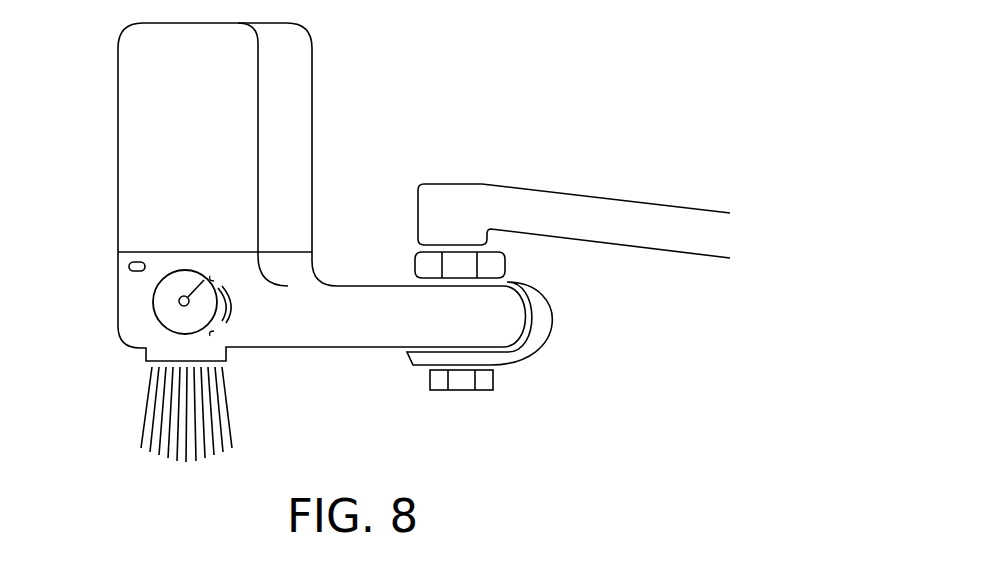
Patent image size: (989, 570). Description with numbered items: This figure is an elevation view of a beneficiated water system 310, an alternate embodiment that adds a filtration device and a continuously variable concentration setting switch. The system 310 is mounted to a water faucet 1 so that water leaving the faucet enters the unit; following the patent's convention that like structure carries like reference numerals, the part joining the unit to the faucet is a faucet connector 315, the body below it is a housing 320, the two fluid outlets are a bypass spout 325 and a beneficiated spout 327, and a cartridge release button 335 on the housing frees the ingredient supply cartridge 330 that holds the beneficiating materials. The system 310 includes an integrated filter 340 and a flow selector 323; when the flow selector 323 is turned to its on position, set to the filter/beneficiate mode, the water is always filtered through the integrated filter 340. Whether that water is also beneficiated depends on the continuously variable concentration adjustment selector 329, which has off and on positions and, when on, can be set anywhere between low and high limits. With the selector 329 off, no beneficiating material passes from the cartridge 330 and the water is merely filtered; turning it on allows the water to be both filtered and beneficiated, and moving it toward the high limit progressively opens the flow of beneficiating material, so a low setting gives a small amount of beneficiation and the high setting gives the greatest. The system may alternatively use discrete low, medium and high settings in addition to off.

The beneficiated water system 310 is at (441, 74).
The water faucet 1 is at (449, 203).
The faucet coupling 315 is at (415, 263).
The arm 320 is at (375, 340).
The flow selector 323 is at (543, 320).
The nut 325 is at (483, 378).
The brush head 327 is at (207, 353).
The concentration adjustment selector 329 is at (157, 316).
The ingredient supply cartridge 330 is at (243, 112).
The indicator light 335 is at (128, 266).
The integrated filter 340 is at (290, 165).